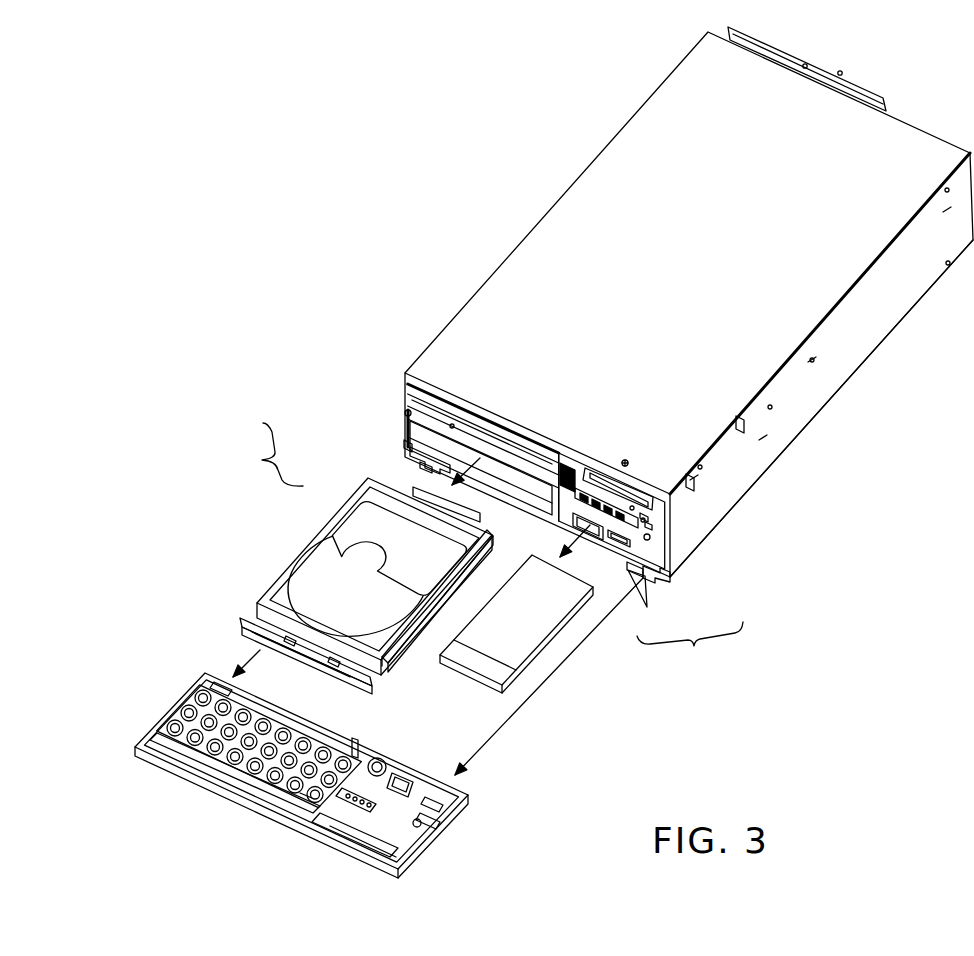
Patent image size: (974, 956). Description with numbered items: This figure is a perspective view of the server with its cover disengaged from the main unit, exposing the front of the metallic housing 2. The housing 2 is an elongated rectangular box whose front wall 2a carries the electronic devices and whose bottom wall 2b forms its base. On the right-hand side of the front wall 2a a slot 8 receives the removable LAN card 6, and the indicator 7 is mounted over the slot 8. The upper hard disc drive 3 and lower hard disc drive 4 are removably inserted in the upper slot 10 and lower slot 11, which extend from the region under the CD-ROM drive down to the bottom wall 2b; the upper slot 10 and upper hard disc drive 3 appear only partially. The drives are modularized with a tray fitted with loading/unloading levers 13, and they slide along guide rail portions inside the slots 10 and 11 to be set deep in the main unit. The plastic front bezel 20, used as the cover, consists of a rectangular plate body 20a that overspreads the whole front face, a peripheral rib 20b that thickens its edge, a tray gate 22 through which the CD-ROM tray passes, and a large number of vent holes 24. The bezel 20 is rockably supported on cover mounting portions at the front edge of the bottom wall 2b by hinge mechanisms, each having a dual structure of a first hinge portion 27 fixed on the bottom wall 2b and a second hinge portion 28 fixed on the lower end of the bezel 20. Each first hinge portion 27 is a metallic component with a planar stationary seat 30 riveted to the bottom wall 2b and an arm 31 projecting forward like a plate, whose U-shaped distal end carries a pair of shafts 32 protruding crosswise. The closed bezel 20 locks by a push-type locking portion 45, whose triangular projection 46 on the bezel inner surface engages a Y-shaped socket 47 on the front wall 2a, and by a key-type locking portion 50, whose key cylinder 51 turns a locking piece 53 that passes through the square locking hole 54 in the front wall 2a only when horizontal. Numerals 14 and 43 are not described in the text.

The housing 2 is at (513, 262).
The front wall 2a is at (523, 507).
The bottom wall 2b is at (817, 417).
The hard disc drive 3 is at (447, 443).
The hard disc drive 4 is at (300, 553).
The LAN card 6 is at (480, 668).
The indicator 7 is at (627, 490).
The slot 8 is at (633, 527).
The upper slot 10 is at (410, 420).
The lower slot 11 is at (410, 447).
The loading/unloading levers 13 is at (477, 440).
The support rail 14 is at (415, 653).
The front bezel 20 is at (152, 748).
The body 20a is at (413, 850).
The rib 20b is at (368, 860).
The tray gate 22 is at (227, 783).
The vent holes 24 is at (175, 736).
The first hinge portion 27 is at (491, 551).
The second hinge portion 28 is at (227, 673).
The stationary seat 30 is at (504, 527).
The arm 31 is at (413, 453).
The shafts 32 is at (420, 467).
The opening 43 is at (352, 822).
The push-type locking portion 45 is at (295, 795).
The projection 46 is at (305, 797).
The socket 47 is at (580, 460).
The key-type locking portion 50 is at (387, 752).
The key cylinder 51 is at (400, 767).
The locking piece 53 is at (360, 757).
The locking hole 54 is at (585, 530).